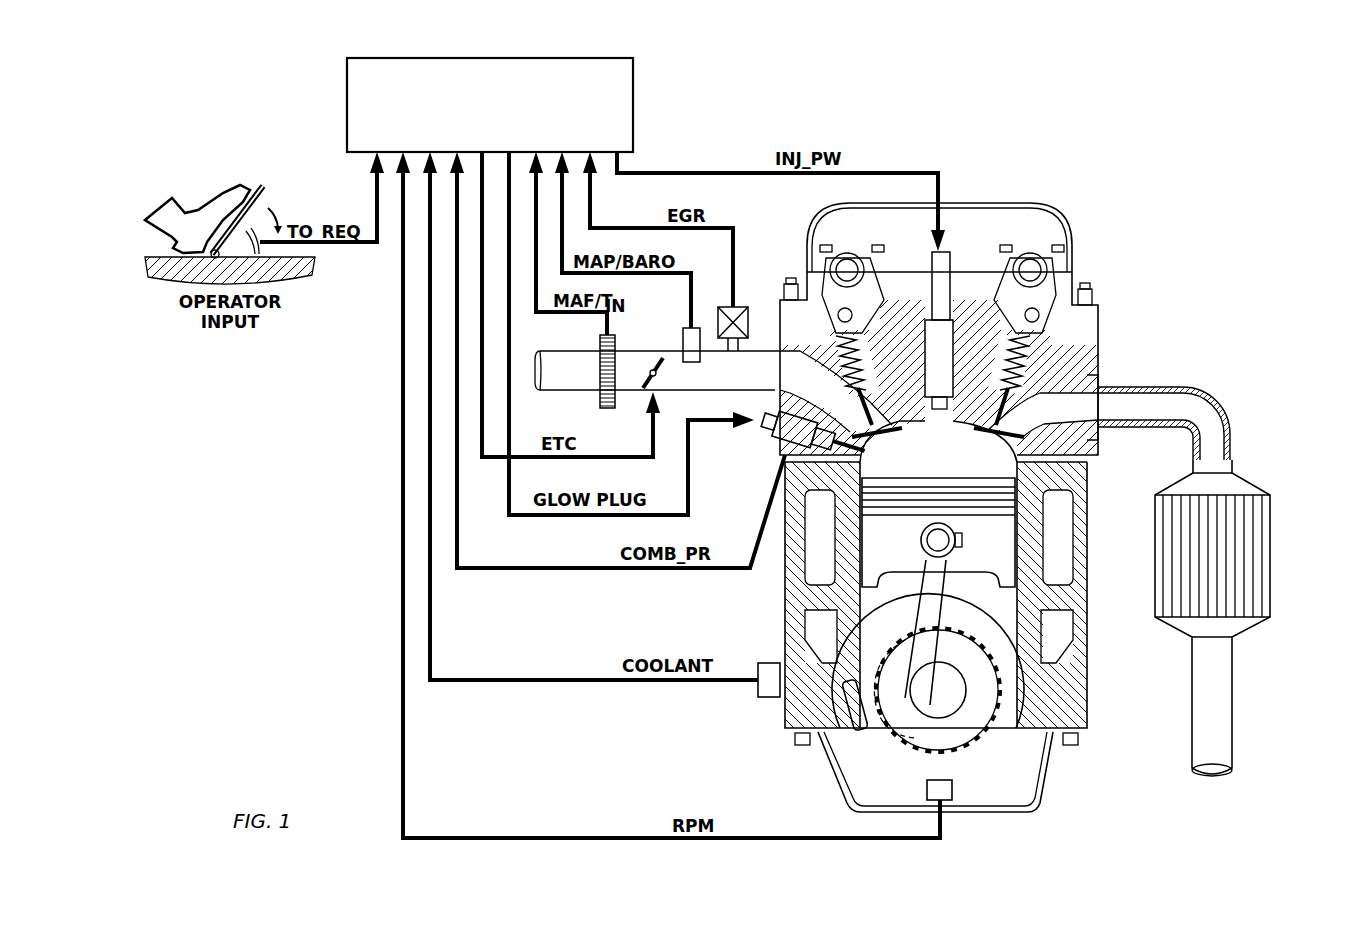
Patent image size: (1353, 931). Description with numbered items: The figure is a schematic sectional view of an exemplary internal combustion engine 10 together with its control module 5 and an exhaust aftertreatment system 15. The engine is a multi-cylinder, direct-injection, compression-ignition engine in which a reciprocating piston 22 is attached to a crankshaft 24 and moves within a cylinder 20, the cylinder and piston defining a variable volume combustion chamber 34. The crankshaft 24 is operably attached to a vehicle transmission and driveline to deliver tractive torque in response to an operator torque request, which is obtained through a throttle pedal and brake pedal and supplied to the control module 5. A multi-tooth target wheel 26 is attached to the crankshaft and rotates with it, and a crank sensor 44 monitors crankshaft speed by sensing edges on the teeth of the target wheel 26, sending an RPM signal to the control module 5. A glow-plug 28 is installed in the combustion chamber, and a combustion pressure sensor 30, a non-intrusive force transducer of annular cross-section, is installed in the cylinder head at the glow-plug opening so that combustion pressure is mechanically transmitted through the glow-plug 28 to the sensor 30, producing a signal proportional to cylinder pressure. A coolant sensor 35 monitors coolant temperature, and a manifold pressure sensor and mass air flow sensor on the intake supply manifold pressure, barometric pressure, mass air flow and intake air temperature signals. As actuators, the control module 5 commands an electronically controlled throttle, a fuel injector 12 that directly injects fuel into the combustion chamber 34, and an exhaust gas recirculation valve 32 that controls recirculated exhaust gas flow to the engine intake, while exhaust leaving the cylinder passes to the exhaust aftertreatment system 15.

The control module 5 is at (612, 66).
The internal combustion engine 10 is at (1060, 215).
The fuel injector 12 is at (947, 262).
The exhaust aftertreatment system 15 is at (1252, 494).
The cylinder 20 is at (1085, 459).
The piston 22 is at (906, 545).
The crankshaft 24 is at (1017, 695).
The multi-tooth target wheel 26 is at (990, 712).
The glow-plug 28 is at (713, 423).
The combustion pressure sensor 30 is at (717, 570).
The exhaust gas recirculation valve 32 is at (742, 302).
The combustion chamber 34 is at (948, 468).
The coolant sensor 35 is at (717, 682).
The crank sensor 44 is at (945, 792).